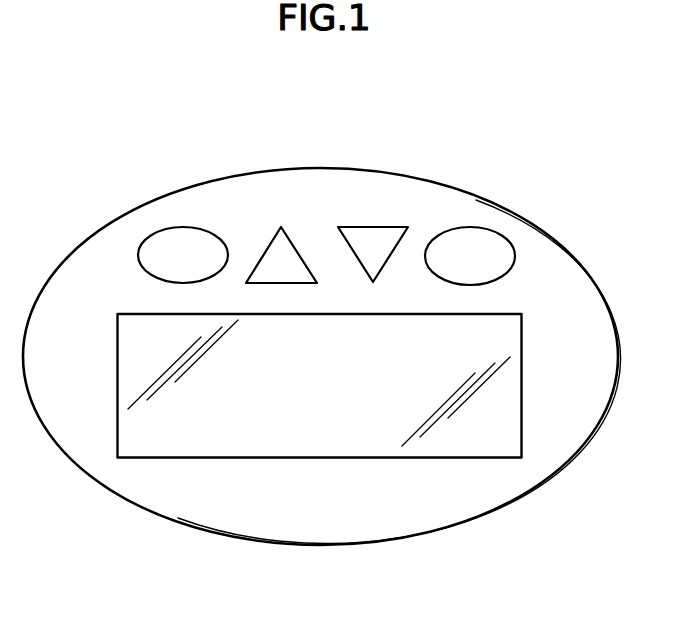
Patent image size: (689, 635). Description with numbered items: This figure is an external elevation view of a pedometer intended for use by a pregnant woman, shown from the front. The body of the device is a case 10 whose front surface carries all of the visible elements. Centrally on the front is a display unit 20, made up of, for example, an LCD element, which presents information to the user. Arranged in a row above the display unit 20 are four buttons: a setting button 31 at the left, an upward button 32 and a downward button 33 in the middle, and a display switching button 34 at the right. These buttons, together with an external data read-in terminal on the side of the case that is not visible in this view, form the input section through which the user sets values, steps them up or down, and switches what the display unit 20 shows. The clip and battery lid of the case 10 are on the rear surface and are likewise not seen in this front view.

The case 10 is at (263, 522).
The display unit 20 is at (457, 434).
The setting button 31 is at (170, 246).
The upward button 32 is at (257, 240).
The downward button 33 is at (380, 234).
The display switching button 34 is at (470, 246).